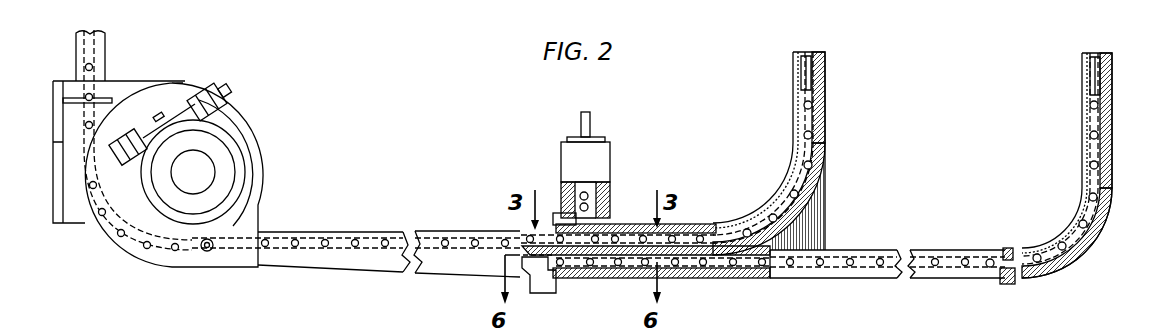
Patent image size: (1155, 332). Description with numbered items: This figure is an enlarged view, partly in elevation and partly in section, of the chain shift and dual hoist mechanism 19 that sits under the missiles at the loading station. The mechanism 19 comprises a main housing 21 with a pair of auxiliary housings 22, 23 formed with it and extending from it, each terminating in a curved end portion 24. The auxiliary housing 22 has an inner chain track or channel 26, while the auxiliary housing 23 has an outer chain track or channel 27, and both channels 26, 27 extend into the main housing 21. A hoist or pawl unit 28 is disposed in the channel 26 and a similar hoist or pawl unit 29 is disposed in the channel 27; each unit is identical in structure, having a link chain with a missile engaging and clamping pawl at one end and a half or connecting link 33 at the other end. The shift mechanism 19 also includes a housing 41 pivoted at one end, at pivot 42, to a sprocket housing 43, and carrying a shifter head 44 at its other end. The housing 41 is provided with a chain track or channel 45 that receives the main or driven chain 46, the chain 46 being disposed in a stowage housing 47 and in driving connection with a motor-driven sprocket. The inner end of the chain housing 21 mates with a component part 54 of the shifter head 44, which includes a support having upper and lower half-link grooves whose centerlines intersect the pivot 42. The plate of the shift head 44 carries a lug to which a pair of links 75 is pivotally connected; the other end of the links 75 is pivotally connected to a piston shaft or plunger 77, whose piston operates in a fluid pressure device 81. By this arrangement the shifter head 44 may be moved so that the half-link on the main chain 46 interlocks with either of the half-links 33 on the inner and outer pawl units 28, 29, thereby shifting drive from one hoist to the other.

The chain shift and dual hoist mechanism 19 is at (412, 215).
The main housing 21 is at (688, 225).
The auxiliary housing 22 is at (792, 162).
The auxiliary housing 23 is at (858, 252).
The curved end portion 24 is at (826, 110).
The inner chain track or channel 26 is at (799, 121).
The outer chain track or channel 27 is at (1088, 246).
The hoist or pawl unit 28 is at (820, 152).
The hoist or pawl unit 29 is at (1055, 266).
The half or connecting link 33 is at (580, 238).
The housing 41 is at (403, 228).
The pivot 42 is at (206, 252).
The sprocket housing 43 is at (122, 222).
The shifter head 44 is at (551, 210).
The chain track or channel 45 is at (478, 241).
The main or driven chain 46 is at (86, 50).
The stowage housing 47 is at (98, 52).
The component part of shifter head 54 is at (570, 286).
The links 75 is at (603, 190).
The piston shaft or plunger 77 is at (575, 188).
The fluid pressure device 81 is at (592, 150).